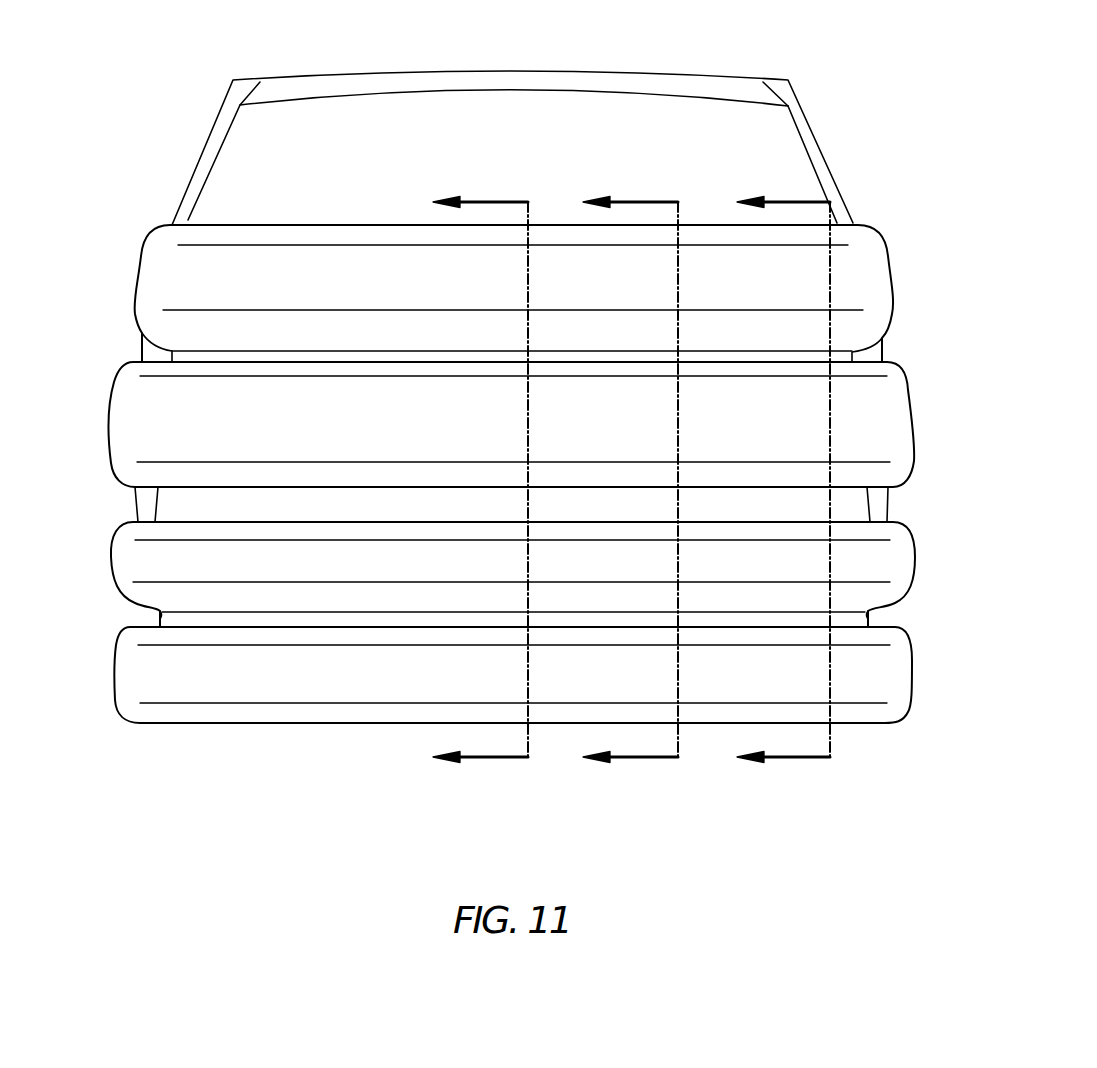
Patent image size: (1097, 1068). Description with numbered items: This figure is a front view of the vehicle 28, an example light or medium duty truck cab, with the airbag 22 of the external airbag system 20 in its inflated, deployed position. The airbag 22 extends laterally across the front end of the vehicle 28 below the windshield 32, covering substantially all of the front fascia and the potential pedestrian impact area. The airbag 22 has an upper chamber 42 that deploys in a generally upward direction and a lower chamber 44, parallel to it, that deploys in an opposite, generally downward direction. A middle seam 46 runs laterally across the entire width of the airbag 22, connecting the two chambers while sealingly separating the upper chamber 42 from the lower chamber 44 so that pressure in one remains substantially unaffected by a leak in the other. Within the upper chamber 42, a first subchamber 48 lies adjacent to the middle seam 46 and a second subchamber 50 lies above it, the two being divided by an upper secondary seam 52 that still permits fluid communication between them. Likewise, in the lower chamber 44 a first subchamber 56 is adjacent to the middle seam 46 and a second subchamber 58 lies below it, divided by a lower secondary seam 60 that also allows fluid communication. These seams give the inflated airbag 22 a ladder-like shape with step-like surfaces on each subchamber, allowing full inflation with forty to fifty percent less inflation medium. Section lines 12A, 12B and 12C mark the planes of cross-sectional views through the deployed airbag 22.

The section line 12A is at (488, 200).
The section line 12B is at (637, 200).
The section line 12C is at (789, 200).
The external airbag system 20 is at (513, 467).
The airbag 22 is at (882, 229).
The vehicle 28 is at (838, 46).
The windshield 32 is at (349, 131).
The upper chamber 42 is at (516, 356).
The lower chamber 44 is at (509, 622).
The middle seam 46 is at (852, 510).
The first subchamber of the upper chamber 48 is at (912, 410).
The second subchamber of the upper chamber 50 is at (890, 282).
The upper secondary seam 52 is at (843, 357).
The first subchamber of the lower chamber 56 is at (916, 560).
The second subchamber of the lower chamber 58 is at (910, 673).
The lower secondary seam 60 is at (855, 622).